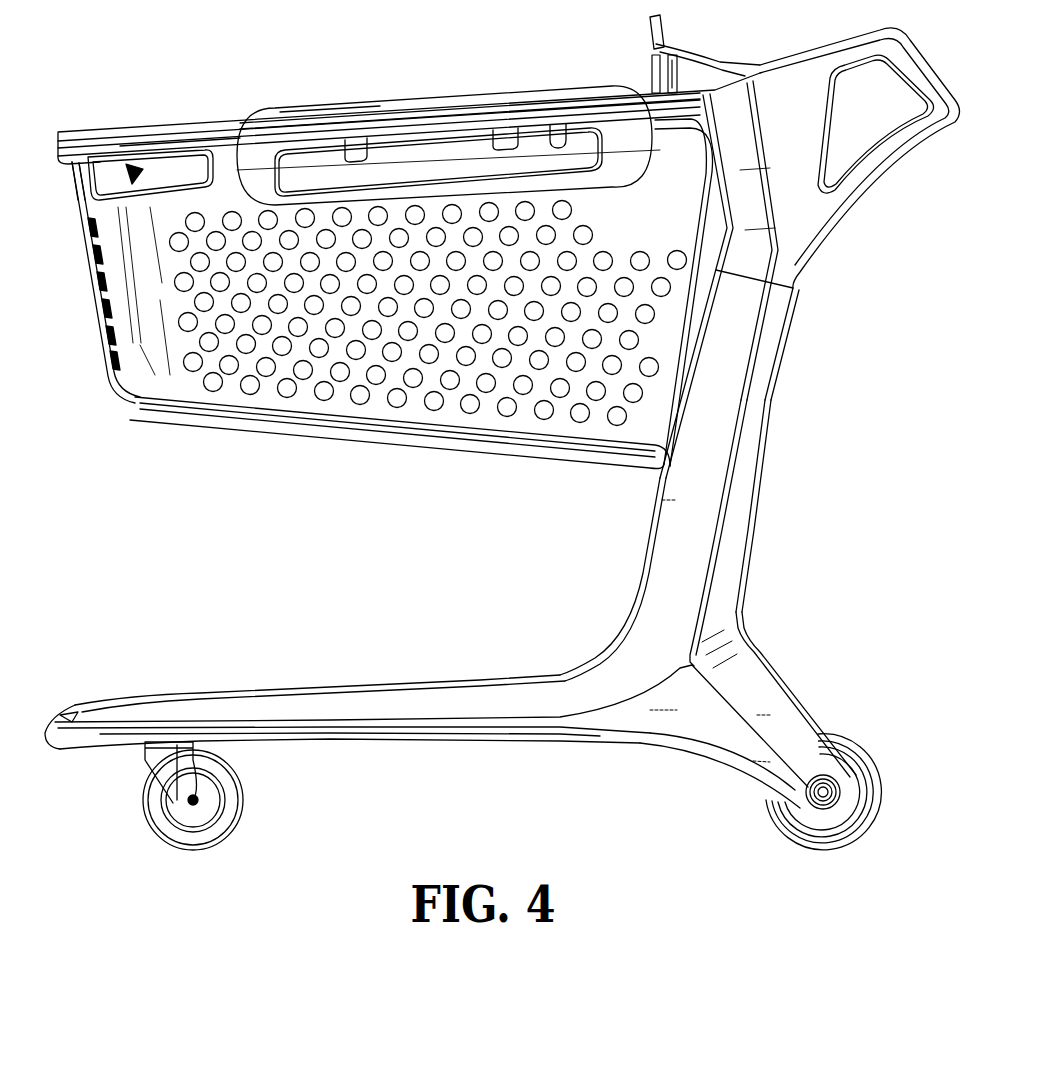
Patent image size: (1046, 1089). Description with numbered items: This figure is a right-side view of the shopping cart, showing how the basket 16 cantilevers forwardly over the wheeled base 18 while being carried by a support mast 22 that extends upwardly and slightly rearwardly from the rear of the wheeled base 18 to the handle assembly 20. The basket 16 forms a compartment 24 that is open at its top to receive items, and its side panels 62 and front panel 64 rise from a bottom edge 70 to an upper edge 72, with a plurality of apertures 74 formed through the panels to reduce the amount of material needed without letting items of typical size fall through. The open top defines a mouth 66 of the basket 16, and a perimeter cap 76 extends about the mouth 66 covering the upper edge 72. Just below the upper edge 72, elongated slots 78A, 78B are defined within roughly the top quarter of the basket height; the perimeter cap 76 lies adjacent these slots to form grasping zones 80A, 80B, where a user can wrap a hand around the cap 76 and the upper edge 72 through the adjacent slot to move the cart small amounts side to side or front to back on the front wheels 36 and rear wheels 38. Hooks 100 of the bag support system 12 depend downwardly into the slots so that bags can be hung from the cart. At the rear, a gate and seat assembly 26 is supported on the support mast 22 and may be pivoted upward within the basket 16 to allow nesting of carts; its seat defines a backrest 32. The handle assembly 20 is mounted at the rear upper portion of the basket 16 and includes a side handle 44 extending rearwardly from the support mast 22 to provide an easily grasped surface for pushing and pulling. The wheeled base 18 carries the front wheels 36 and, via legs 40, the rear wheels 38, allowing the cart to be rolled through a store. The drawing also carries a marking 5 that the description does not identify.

The section indicator 5 is at (296, 107).
The bag support system 12 is at (372, 104).
The basket 16 is at (150, 372).
The wheeled base 18 is at (375, 719).
The handle assembly 20 is at (892, 172).
The support masts 22 is at (703, 503).
The compartment 24 is at (130, 165).
The gate and seat assembly 26 is at (750, 66).
The backrest 32 is at (668, 40).
The front wheels 36 is at (183, 850).
The rear wheels 38 is at (880, 798).
The legs 40 is at (748, 745).
The side handles 44 is at (915, 68).
The side panels 62 is at (435, 418).
The front panel 64 is at (96, 212).
The mouth 66 is at (188, 128).
The bottom edge 70 is at (266, 414).
The upper edge 72 is at (221, 126).
The apertures 74 is at (178, 320).
The perimeter cap 76 is at (417, 127).
The slot 78A is at (558, 128).
The slot 78B is at (156, 152).
The grasping zone 80A is at (492, 128).
The grasping zone 80B is at (84, 146).
The hooks 100 is at (345, 140).